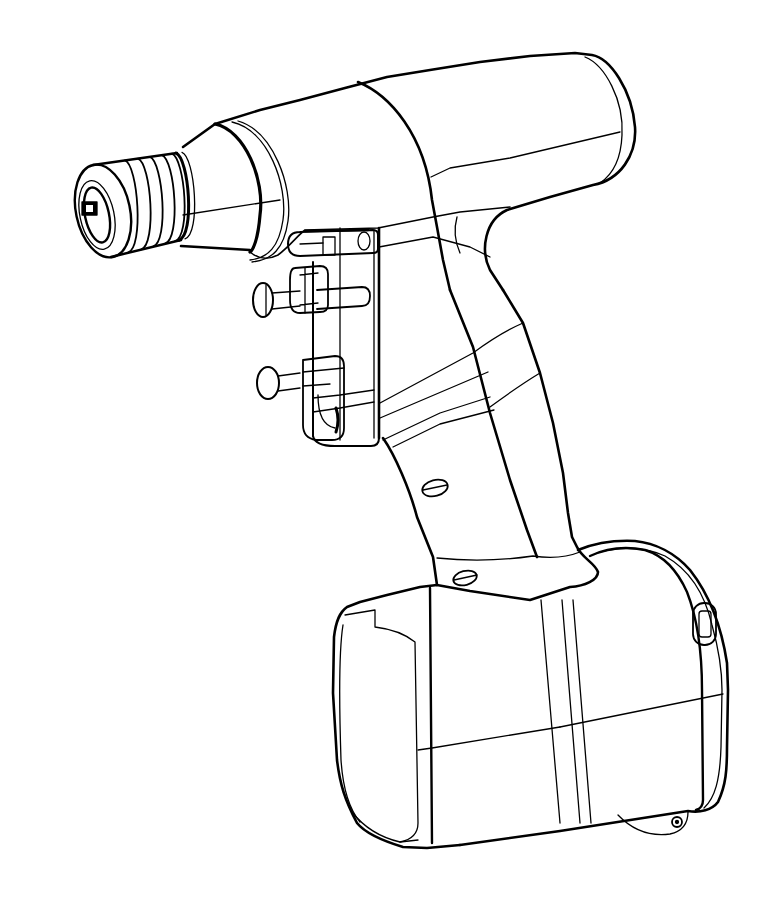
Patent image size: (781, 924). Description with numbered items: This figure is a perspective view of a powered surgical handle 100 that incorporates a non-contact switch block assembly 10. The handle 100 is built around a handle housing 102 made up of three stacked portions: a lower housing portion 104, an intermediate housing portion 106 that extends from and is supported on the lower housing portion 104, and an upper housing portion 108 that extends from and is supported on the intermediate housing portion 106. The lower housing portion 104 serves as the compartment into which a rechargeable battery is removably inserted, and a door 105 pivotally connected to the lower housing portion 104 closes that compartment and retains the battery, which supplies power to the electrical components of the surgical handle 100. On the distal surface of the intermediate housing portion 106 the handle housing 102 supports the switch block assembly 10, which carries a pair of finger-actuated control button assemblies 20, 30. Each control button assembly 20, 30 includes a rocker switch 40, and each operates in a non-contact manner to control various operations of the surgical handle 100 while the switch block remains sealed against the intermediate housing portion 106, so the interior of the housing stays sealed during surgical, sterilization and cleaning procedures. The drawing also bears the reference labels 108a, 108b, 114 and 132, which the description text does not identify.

The surgical handle 100 is at (116, 54).
The handle housing 102 is at (630, 73).
The lower housing portion 104 is at (334, 689).
The door 105 is at (684, 547).
The intermediate housing portion 106 is at (556, 375).
The upper housing portion 108 is at (647, 152).
The chuck / nose collar 108a is at (88, 167).
The tool bit socket 108b is at (85, 216).
The nose cone 114 is at (177, 143).
The mounting bar 132 is at (303, 262).
The switch block assembly 10 is at (339, 464).
The control button assembly 20 is at (256, 302).
The control button assembly 30 is at (256, 385).
The rocker switch 40 is at (300, 318).